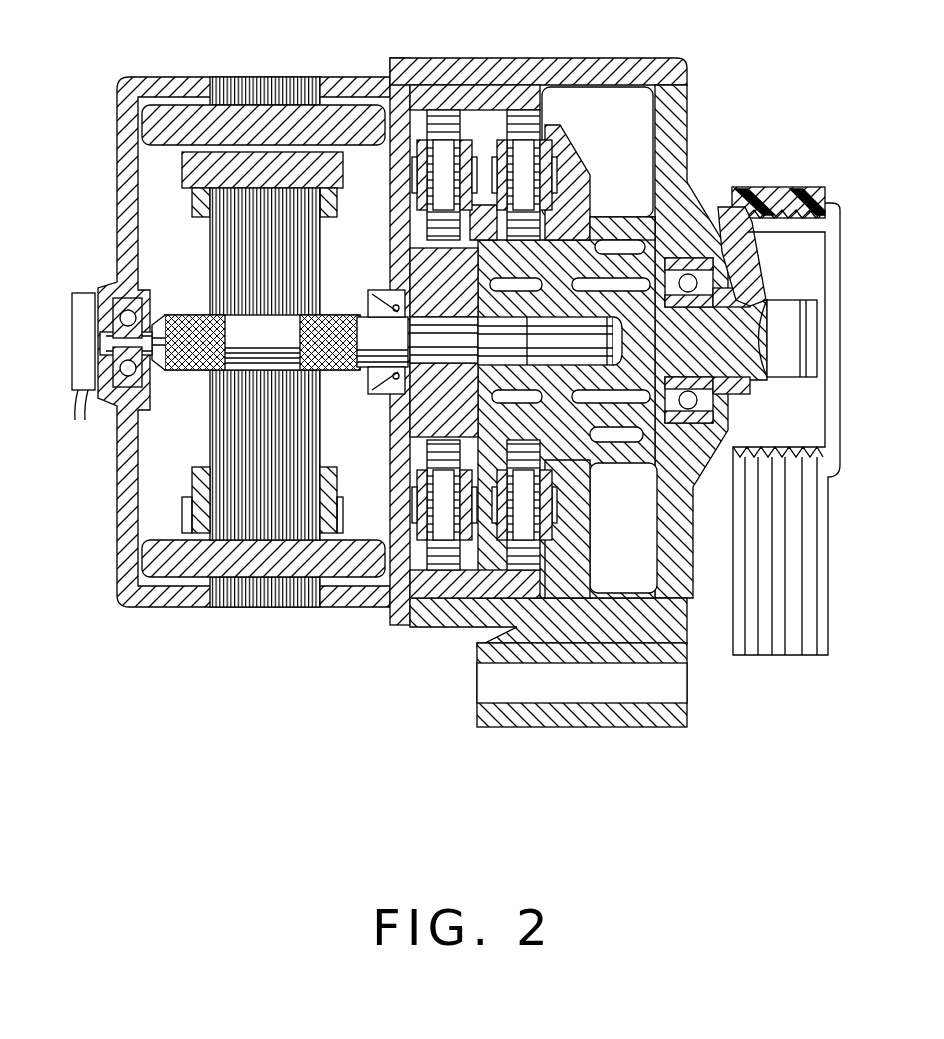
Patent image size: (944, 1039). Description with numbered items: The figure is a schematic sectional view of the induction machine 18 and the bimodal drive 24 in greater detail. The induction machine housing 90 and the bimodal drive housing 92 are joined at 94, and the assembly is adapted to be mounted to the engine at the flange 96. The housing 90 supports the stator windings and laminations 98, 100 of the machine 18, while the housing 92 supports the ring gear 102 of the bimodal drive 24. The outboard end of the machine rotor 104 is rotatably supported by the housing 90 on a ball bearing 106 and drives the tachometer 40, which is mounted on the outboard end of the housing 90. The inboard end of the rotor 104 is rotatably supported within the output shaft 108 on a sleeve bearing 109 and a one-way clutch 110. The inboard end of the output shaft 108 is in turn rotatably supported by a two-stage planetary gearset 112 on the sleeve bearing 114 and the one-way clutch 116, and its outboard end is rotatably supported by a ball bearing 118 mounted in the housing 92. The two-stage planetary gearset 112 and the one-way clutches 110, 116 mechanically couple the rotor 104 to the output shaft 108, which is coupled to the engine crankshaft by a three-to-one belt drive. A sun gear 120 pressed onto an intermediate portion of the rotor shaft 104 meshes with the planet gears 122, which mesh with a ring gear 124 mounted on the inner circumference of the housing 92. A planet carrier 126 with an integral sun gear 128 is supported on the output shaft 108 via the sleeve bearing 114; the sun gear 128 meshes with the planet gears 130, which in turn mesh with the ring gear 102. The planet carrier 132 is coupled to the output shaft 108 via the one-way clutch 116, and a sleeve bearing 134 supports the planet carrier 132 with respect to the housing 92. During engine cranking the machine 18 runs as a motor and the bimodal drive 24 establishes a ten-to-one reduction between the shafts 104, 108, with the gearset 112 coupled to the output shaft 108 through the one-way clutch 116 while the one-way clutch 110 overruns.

The induction machine 18 is at (231, 360).
The bimodal drive 24 is at (582, 395).
The tachometer 40 is at (80, 294).
The induction machine housing 90 is at (188, 76).
The bimodal drive housing 92 is at (490, 68).
The joint of housings 94 is at (386, 60).
The flange 96 is at (655, 717).
The stator windings 98 is at (352, 105).
The stator laminations 100 is at (258, 77).
The ring gear 102 is at (548, 75).
The machine rotor 104 is at (173, 372).
The ball bearing 106 is at (143, 310).
The output shaft 108 is at (770, 300).
The sleeve bearing 109 is at (503, 358).
The one-way clutch 110 is at (603, 330).
The two-stage planetary gearset 112 is at (567, 130).
The sleeve bearing 114 is at (678, 238).
The one-way clutch 116 is at (673, 240).
The ball bearing 118 is at (718, 405).
The sun gear 120 is at (425, 268).
The planet gears 122 is at (430, 220).
The ring gear 124 is at (440, 86).
The planet carrier 126 is at (470, 612).
The sun gear 128 is at (522, 423).
The planet gears 130 is at (537, 543).
The planet carrier 132 is at (530, 280).
The sleeve bearing 134 is at (570, 430).